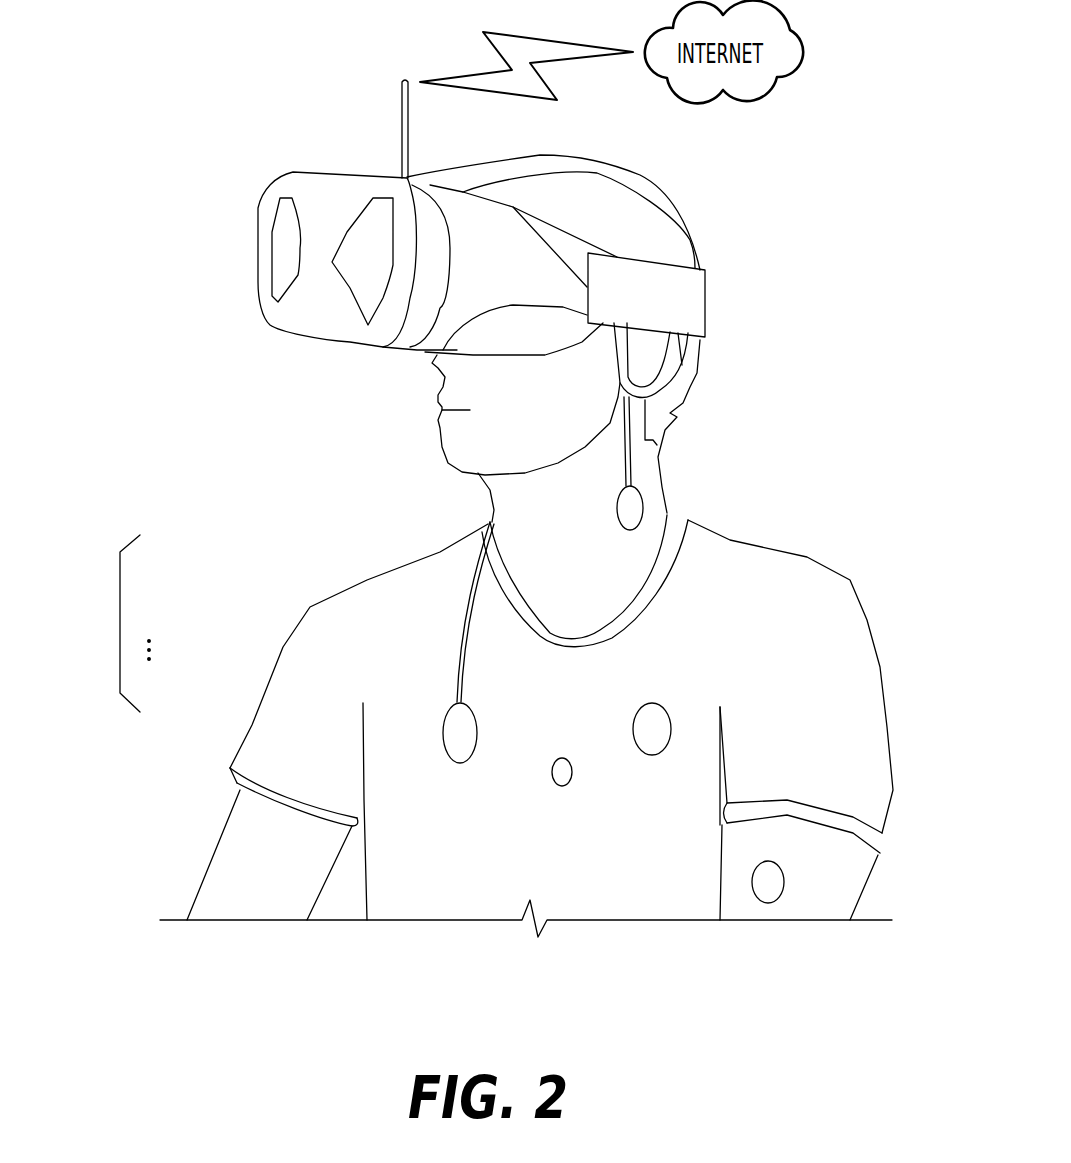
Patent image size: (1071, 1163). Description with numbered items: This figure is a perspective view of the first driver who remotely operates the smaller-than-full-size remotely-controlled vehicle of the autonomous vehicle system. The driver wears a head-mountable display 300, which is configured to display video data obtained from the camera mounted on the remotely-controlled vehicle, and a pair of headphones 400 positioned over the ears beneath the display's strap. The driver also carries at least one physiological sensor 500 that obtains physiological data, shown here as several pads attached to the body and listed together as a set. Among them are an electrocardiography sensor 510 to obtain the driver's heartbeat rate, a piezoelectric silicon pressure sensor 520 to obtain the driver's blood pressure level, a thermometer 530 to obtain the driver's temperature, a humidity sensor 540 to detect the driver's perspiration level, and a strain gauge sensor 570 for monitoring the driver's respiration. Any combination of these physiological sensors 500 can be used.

The head-mountable display 300 is at (270, 320).
The pair of headphones 400 is at (652, 362).
The physiological sensor 500 is at (120, 620).
The electrocardiography (ECG) sensor 510 is at (673, 722).
The piezoelectric silicon pressure sensor 520 is at (784, 880).
The thermometer 530 is at (640, 503).
The humidity sensor 540 is at (443, 737).
The strain gauge sensor 570 is at (568, 785).